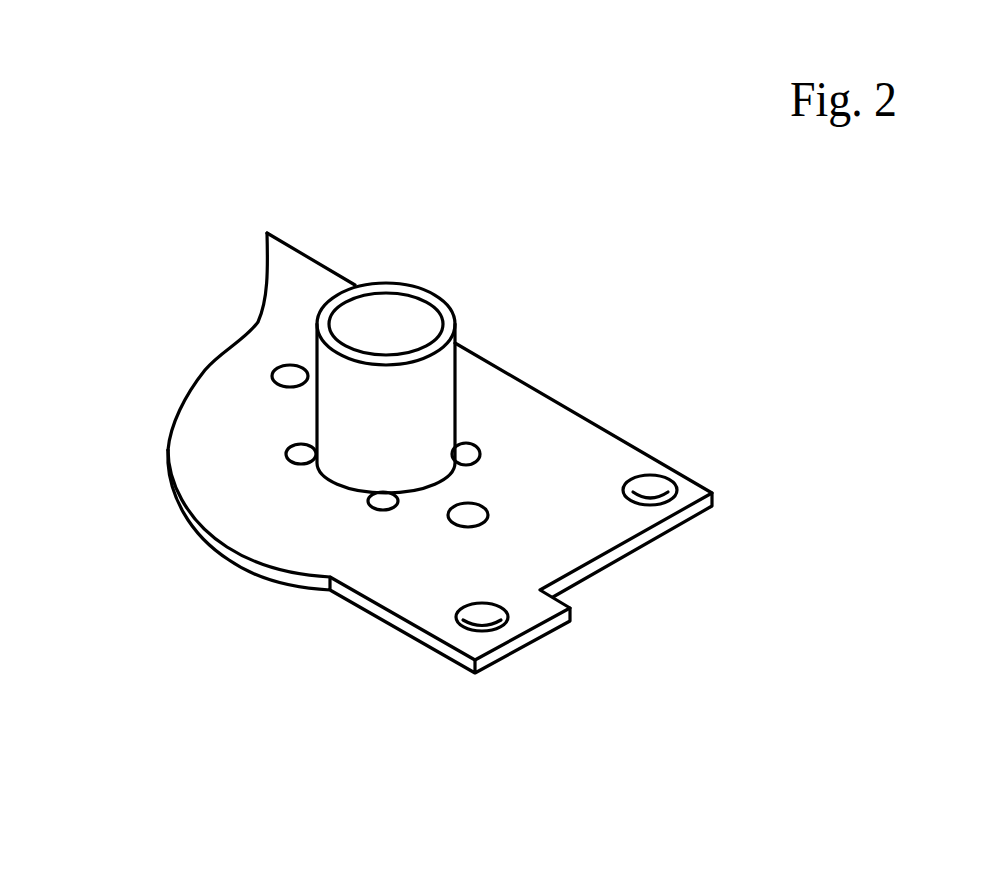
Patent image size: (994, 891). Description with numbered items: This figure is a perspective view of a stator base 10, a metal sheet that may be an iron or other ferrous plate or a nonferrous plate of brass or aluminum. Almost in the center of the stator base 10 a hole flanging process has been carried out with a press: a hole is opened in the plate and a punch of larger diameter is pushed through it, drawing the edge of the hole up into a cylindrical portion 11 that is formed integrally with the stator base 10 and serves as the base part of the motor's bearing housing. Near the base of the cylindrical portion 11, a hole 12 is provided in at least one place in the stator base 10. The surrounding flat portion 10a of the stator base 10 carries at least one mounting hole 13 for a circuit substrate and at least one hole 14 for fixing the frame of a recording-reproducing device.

The stator base 10 is at (689, 457).
The flat portion 10a is at (260, 407).
The cylindrical portion 11 is at (435, 390).
The hole 12 is at (467, 458).
The mounting hole 13 is at (463, 517).
The hole 14 is at (477, 613).